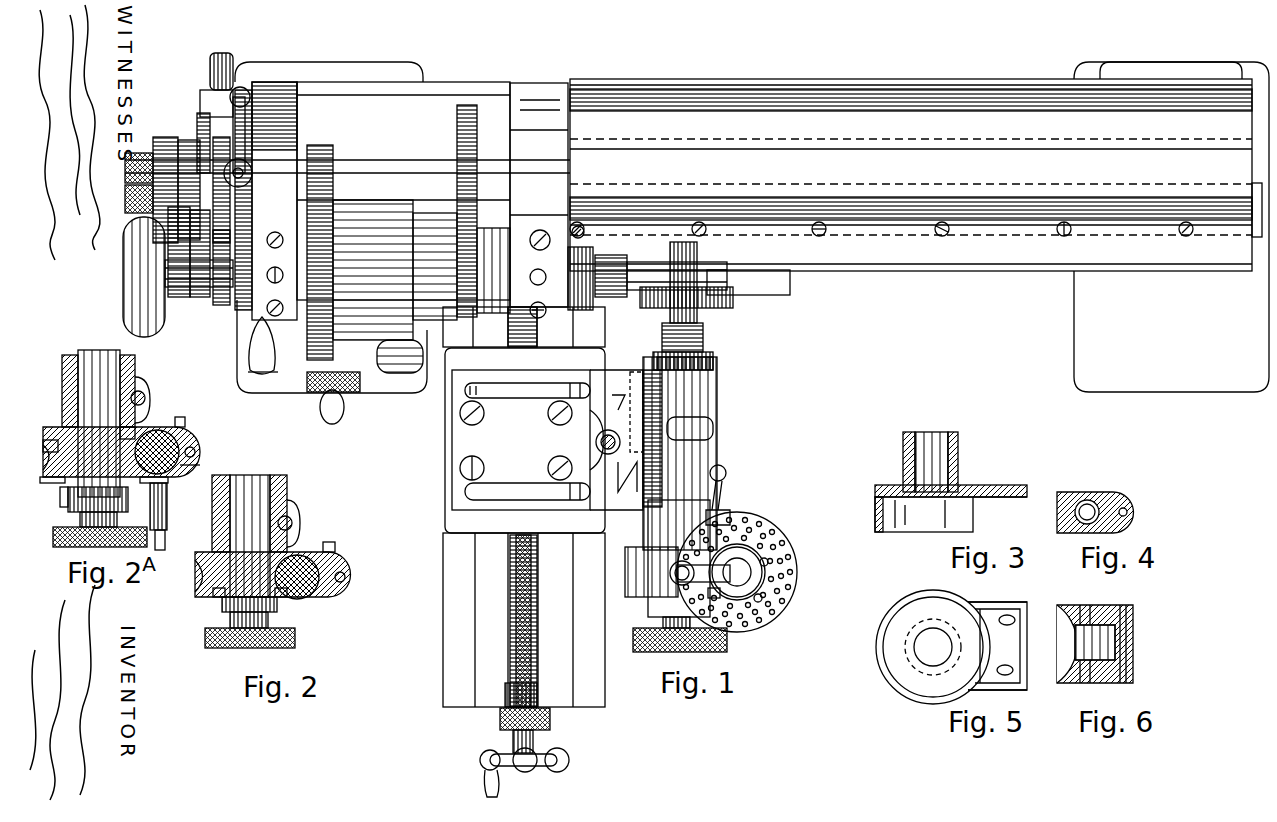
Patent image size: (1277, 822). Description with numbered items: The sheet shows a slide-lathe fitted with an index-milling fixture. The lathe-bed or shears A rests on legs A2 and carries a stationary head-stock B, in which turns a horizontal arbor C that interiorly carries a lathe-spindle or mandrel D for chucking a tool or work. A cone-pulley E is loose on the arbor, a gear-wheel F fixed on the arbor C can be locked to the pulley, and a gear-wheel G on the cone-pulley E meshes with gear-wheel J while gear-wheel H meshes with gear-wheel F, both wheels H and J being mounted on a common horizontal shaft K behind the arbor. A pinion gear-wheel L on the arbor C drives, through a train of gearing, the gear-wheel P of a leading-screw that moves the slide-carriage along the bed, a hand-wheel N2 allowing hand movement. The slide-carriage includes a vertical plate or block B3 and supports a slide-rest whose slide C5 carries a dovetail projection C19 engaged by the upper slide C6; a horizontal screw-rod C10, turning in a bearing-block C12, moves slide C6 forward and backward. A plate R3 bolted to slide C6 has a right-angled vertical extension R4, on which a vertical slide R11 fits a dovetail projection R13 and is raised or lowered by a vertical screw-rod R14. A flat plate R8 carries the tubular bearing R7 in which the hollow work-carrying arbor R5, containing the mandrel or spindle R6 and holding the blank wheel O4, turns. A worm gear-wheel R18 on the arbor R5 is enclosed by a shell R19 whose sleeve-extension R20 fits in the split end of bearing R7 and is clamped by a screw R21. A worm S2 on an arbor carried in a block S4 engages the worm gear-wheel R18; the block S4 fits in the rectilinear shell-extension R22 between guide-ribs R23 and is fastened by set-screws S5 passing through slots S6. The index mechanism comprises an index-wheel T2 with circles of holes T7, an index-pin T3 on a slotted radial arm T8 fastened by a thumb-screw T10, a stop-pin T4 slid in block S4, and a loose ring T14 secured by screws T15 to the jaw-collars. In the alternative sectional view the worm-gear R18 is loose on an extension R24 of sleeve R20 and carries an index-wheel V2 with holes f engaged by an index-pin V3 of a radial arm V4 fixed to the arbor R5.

In FIG. 1, the lathe-bed or shears A is at (916, 175).
In FIG. 1, the legs A2 is at (753, 243).
In FIG. 1, the stationary head-stock B is at (409, 191).
In FIG. 1, the vertical plate or block B3 is at (748, 282).
In FIG. 1, the horizontal arbor C is at (608, 255).
In FIG. 1, the slide C5 is at (610, 675).
In FIG. 1, the upper slide C6 is at (525, 440).
In FIG. 1, the horizontal screw-rod C10 is at (537, 612).
In FIG. 1, the bearing-block C12 is at (537, 692).
In FIG. 1, the dovetail projection C19 is at (524, 507).
In FIG. 1, the lathe-spindle or mandrel D is at (175, 305).
In FIG. 1, the cone-pulley E is at (421, 270).
In FIG. 1, the gear-wheel F is at (278, 325).
In FIG. 1, the gear-wheel G is at (510, 327).
In FIG. 1, the gear-wheel H is at (330, 147).
In FIG. 1, the gear-wheel J is at (477, 122).
In FIG. 1, the horizontal shaft K is at (347, 167).
In FIG. 1, the pinion gear-wheel L is at (222, 305).
In FIG. 1, the gear-wheel of leading-screw P is at (140, 244).
In FIG. 1, the hand-wheel N2 is at (392, 373).
In FIG. 1, the wheel O4 is at (733, 300).
In FIG. 1, the plate R3 is at (521, 440).
In FIG. 1, the vertical extension R4 is at (598, 378).
In FIG. 1, the hollow arbor R5 is at (703, 337).
In FIG. 2A, the hollow arbor R5 is at (99, 423).
In FIG. 2, the hollow arbor R5 is at (265, 475).
In FIG. 1, the mandrel or spindle R6 is at (663, 620).
In FIG. 2A, the mandrel or spindle R6 is at (117, 517).
In FIG. 2, the mandrel or spindle R6 is at (268, 614).
In FIG. 1, the tube R7 is at (717, 452).
In FIG. 1, the flat plate R8 is at (629, 474).
In FIG. 1, the vertical slide R11 is at (631, 412).
In FIG. 1, the dovetail projection R13 is at (610, 411).
In FIG. 1, the vertical screw shaft or rod R14 is at (596, 442).
In FIG. 2A, the worm gear-wheel R18 is at (135, 425).
In FIG. 2, the worm gear-wheel R18 is at (213, 597).
In FIG. 1, the shell R19 is at (667, 558).
In FIG. 2A, the shell R19 is at (33, 457).
In FIG. 2, the shell R19 is at (190, 568).
In FIG. 3, the shell R19 is at (875, 510).
In FIG. 5, the shell R19 is at (933, 647).
In FIG. 2A, the sleeve-extension R20 is at (62, 400).
In FIG. 2, the sleeve-extension R20 is at (212, 530).
In FIG. 3, the sleeve-extension R20 is at (903, 456).
In FIG. 1, the screw R21 is at (735, 518).
In FIG. 2A, the screw R21 is at (146, 398).
In FIG. 2, the screw R21 is at (293, 523).
In FIG. 3, the rectilinear projecting portion R22 is at (1015, 485).
In FIG. 5, the rectilinear projecting portion R22 is at (997, 646).
In FIG. 3, the guide-ribs R23 is at (1015, 497).
In FIG. 5, the guide-ribs R23 is at (1005, 602).
In FIG. 2A, the extension R24 is at (84, 499).
In FIG. 2A, the worm S2 is at (205, 443).
In FIG. 2, the worm S2 is at (345, 565).
In FIG. 2A, the block S4 is at (180, 440).
In FIG. 2, the block S4 is at (325, 592).
In FIG. 4, the block S4 is at (1125, 494).
In FIG. 6, the block S4 is at (1118, 607).
In FIG. 2A, the set-screws S5 is at (185, 420).
In FIG. 2, the set-screws S5 is at (335, 546).
In FIG. 5, the slots S6 is at (998, 620).
In FIG. 1, the index-wheel T2 is at (796, 568).
In FIG. 1, the index-pin T3 is at (708, 598).
In FIG. 2A, the stop-pin T4 is at (196, 452).
In FIG. 2, the stop-pin T4 is at (346, 577).
In FIG. 1, the holes or sockets T7 is at (760, 530).
In FIG. 1, the radial arm T8 is at (703, 575).
In FIG. 1, the thumb-screw T10 is at (737, 572).
In FIG. 1, the ring T14 is at (737, 572).
In FIG. 1, the screws T15 is at (768, 560).
In FIG. 2A, the index-wheel V2 is at (111, 482).
In FIG. 2A, the index-pin V3 is at (174, 513).
In FIG. 2A, the radial arm V4 is at (122, 518).
In FIG. 2A, the sockets or holes f is at (203, 467).